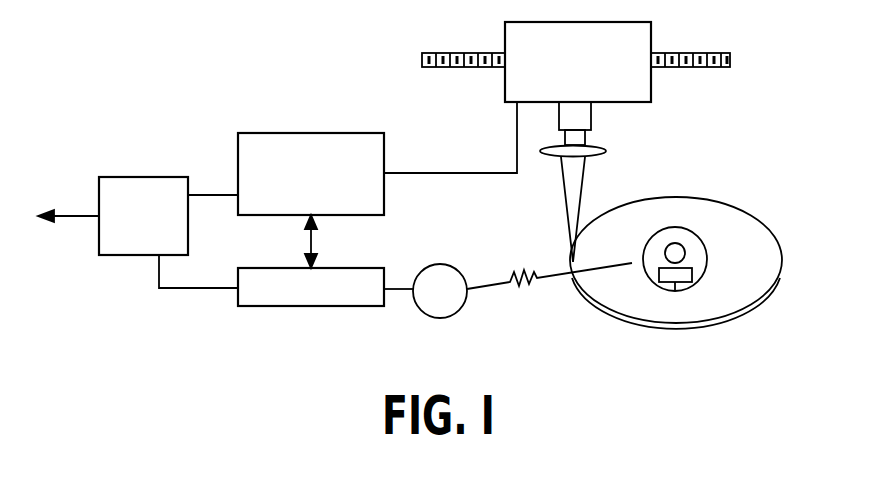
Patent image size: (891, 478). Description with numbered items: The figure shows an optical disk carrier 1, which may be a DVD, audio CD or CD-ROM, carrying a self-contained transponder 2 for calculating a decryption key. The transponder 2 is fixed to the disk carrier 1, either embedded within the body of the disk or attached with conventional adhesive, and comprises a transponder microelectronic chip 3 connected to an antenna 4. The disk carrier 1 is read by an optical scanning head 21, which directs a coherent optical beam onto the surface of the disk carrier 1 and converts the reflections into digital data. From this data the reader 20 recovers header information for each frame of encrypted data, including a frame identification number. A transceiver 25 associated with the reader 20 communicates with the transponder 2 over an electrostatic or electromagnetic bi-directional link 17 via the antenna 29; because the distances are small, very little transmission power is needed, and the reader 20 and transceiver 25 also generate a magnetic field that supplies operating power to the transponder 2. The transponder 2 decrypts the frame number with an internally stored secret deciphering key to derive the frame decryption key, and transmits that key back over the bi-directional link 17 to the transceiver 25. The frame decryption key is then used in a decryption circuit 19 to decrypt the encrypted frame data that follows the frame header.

The optical disk carrier 1 is at (773, 237).
The transponder 2 is at (700, 262).
The transponder microelectronic chip 3 is at (691, 275).
The antenna 4 is at (650, 282).
The bi-directional link 17 is at (537, 270).
The decryption circuit 19 is at (122, 257).
The reader 20 is at (370, 133).
The optical scanning head 21 is at (643, 102).
The transceiver 25 is at (330, 307).
The antenna 29 is at (458, 311).